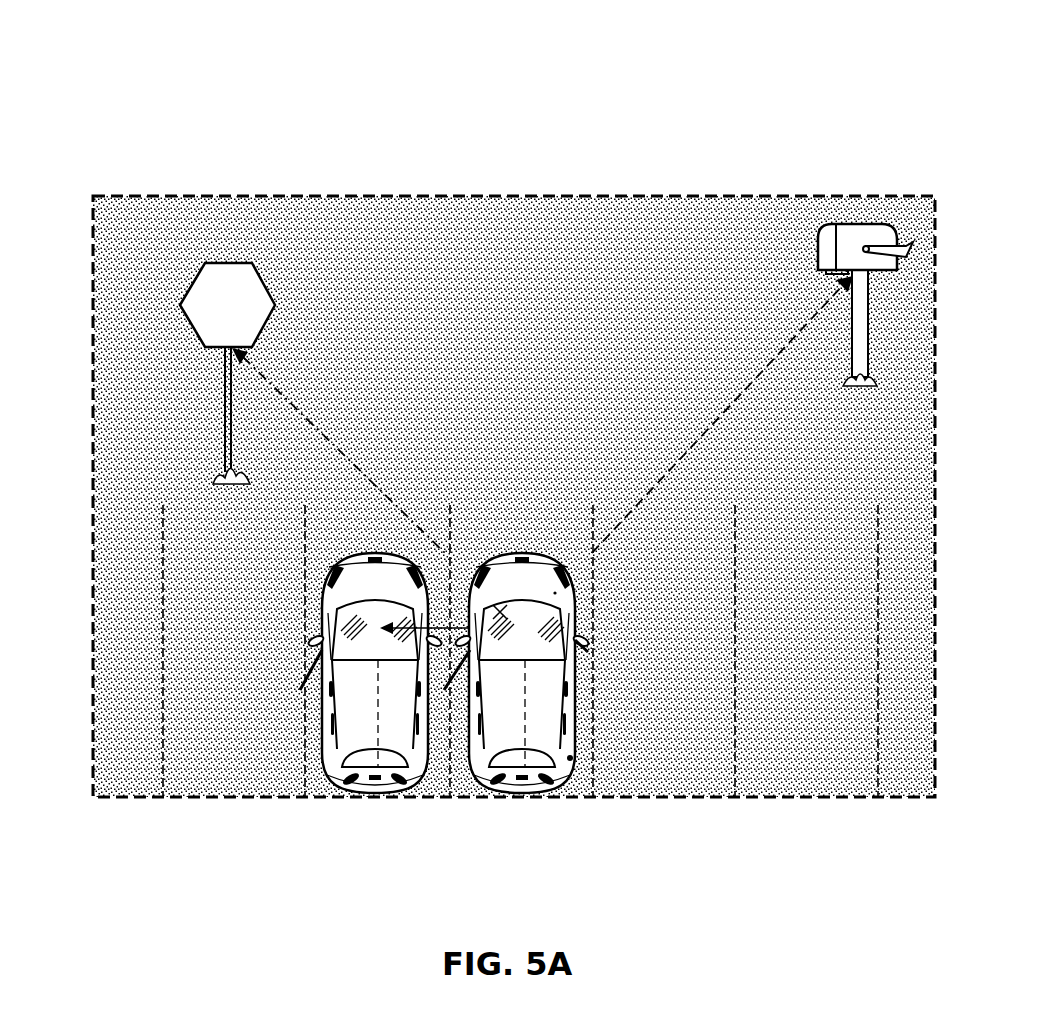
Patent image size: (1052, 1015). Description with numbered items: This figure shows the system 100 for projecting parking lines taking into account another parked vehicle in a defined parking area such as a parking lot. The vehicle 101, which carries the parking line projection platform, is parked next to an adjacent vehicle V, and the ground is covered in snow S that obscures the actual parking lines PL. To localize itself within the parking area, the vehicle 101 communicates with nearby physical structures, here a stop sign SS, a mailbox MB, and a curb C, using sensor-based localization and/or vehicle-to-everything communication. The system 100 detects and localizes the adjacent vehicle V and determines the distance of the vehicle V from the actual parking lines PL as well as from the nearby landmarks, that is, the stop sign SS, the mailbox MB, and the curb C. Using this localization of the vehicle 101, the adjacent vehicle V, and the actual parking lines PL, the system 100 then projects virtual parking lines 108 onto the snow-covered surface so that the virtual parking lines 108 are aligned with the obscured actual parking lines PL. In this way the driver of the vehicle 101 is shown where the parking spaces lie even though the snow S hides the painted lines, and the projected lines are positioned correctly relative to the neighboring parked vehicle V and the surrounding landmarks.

The system 100 is at (150, 42).
The stop sign SS is at (185, 305).
The mailbox MB is at (850, 222).
The snow S is at (178, 728).
The vehicle V is at (371, 766).
The vehicle 101 is at (512, 766).
The curb C is at (567, 762).
The virtual parking lines 108 is at (594, 762).
The actual parking lines PL is at (723, 785).